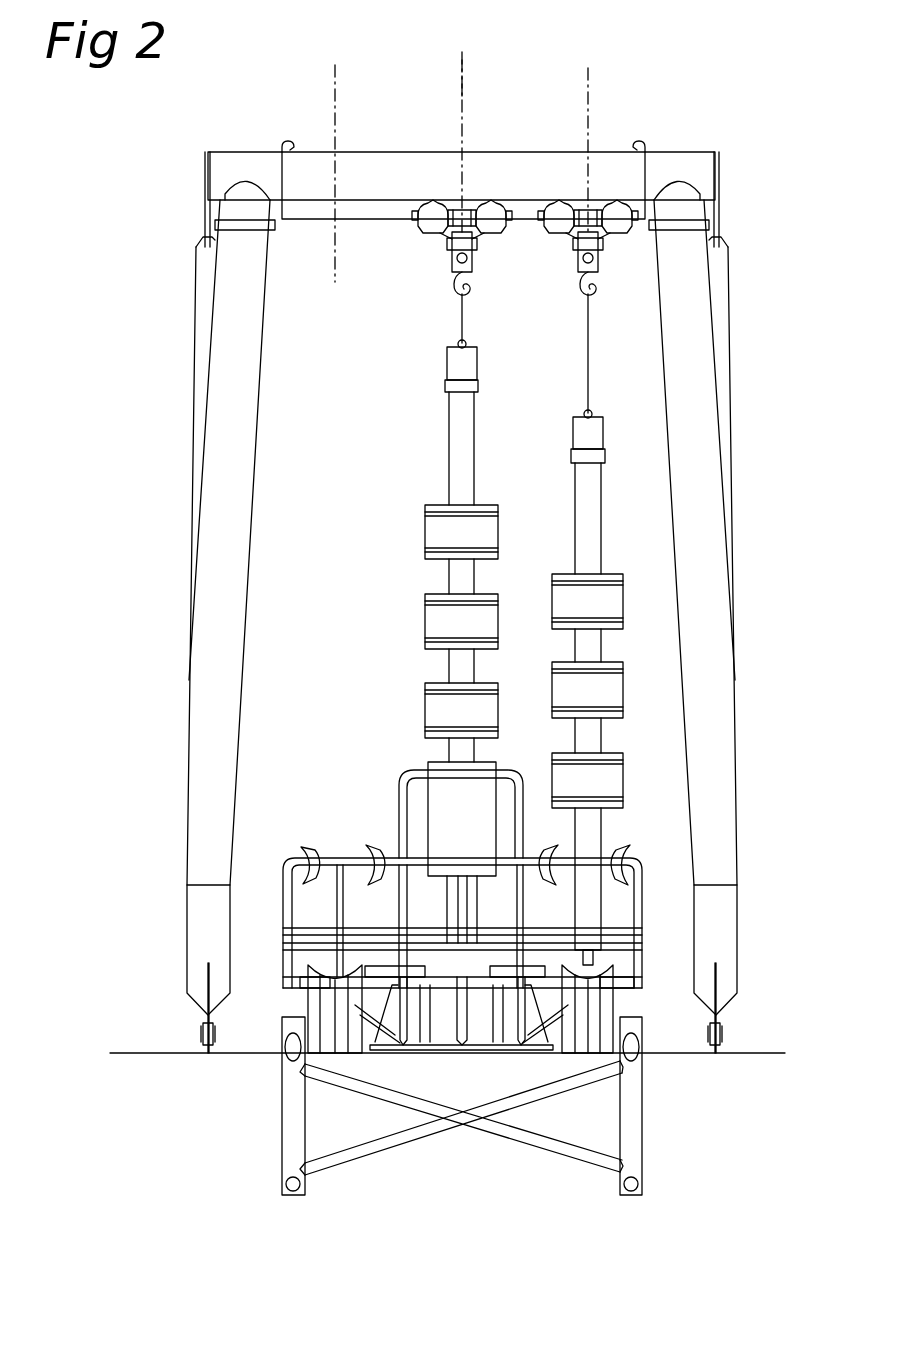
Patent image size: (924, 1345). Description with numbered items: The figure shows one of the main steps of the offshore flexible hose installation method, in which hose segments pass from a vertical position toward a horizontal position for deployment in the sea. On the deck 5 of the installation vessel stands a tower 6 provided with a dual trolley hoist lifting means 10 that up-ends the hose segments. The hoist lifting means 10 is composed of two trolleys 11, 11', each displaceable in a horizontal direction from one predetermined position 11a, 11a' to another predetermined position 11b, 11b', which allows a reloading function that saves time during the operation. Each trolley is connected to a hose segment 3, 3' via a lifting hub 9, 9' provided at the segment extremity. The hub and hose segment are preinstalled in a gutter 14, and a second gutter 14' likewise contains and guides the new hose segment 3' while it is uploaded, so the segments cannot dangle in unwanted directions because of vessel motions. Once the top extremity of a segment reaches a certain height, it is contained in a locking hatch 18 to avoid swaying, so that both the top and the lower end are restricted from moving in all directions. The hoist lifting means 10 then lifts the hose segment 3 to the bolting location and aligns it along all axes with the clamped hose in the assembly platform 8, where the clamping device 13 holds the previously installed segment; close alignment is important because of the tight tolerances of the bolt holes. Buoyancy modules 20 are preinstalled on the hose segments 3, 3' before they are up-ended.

The hose segment 3 is at (447, 611).
The new hose segment 3' is at (575, 691).
The deck 5 is at (745, 1053).
The tower 6 is at (513, 164).
The assembly platform 8 is at (308, 963).
The lifting hub 9 is at (447, 321).
The lifting hub 9' is at (608, 356).
The dual trolley hoist lifting means 10 is at (428, 303).
The trolley 11 is at (450, 247).
The trolley 11' is at (584, 247).
The predetermined position 11a is at (495, 139).
The predetermined position 11a' is at (628, 147).
The predetermined position 11b is at (305, 172).
The predetermined position 11b' is at (431, 67).
The clamping device 13 is at (418, 980).
The gutter 14 is at (297, 1047).
The gutter 14' is at (637, 1049).
The locking hatch 18 is at (311, 855).
The buoyancy modules 20 is at (438, 530).